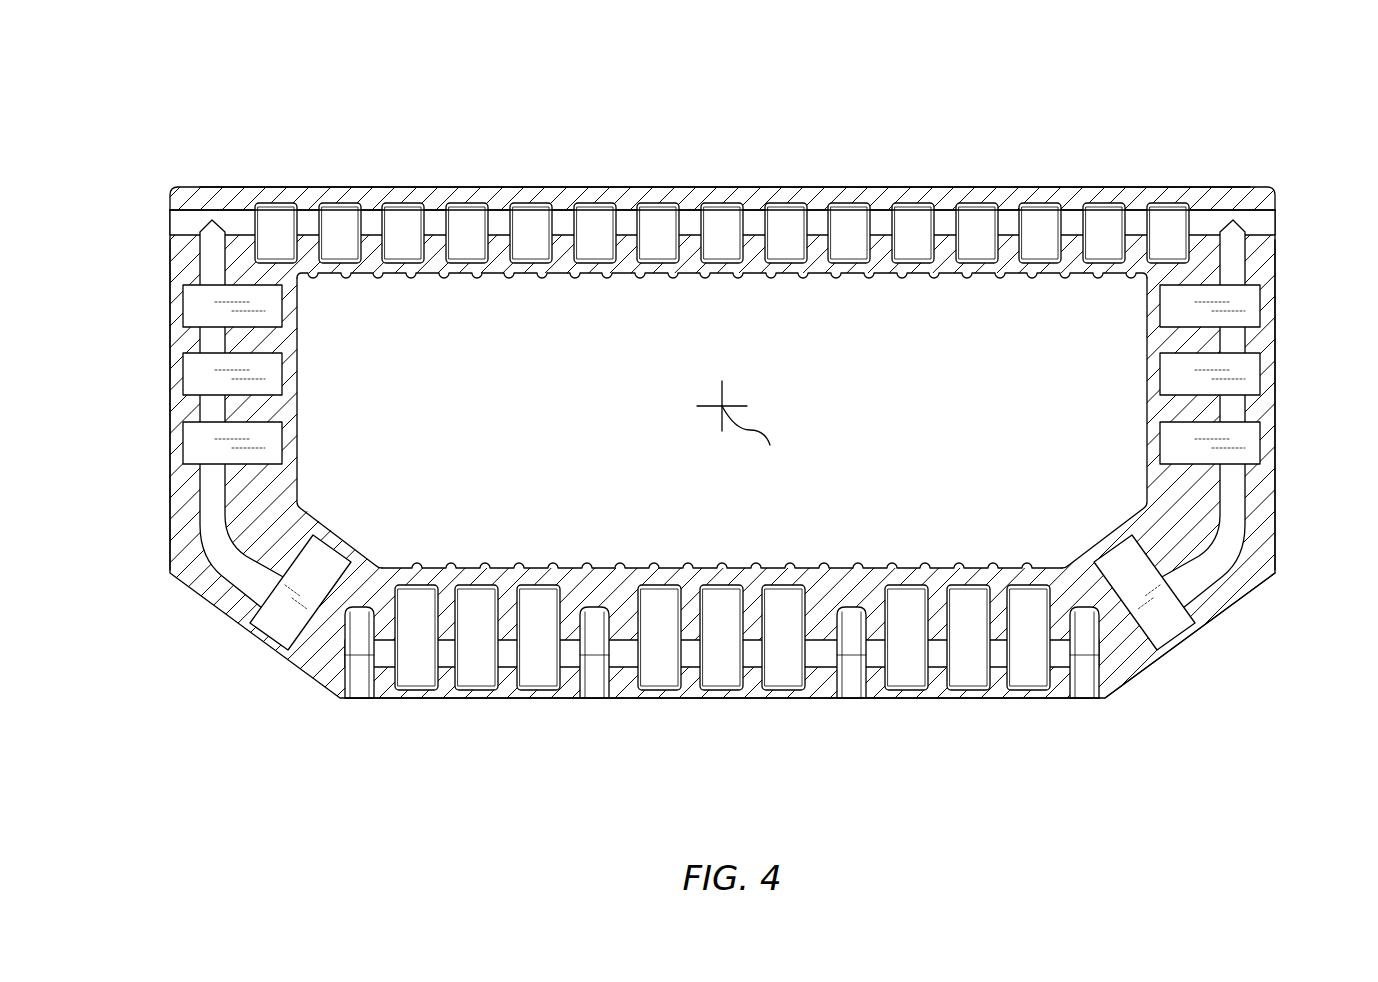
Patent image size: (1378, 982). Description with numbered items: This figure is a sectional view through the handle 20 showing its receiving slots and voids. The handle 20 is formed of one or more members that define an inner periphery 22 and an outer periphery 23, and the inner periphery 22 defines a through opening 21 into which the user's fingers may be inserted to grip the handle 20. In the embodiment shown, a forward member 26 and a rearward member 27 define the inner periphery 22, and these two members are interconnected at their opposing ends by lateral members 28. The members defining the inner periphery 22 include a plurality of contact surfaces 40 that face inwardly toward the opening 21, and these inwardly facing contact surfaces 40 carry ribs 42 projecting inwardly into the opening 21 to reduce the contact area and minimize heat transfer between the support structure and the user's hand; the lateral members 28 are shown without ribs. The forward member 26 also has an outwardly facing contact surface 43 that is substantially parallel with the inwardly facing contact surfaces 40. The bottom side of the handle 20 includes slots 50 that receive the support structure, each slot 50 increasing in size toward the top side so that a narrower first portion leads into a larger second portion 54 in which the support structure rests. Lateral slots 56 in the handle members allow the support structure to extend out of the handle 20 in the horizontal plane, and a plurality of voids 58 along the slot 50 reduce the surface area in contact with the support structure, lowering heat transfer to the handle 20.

The handle 20 is at (1074, 120).
The through opening 21 is at (887, 338).
The inner periphery 22 is at (667, 307).
The outer periphery 23 is at (347, 165).
The forward member 26 is at (753, 195).
The rearward member 27 is at (628, 698).
The lateral members 28 is at (178, 345).
The contact surfaces 40 is at (338, 412).
The ribs 42 is at (490, 283).
The outwardly facing contact surface 43 is at (561, 168).
The slot 50 is at (1247, 513).
The second portion 54 is at (1010, 222).
The lateral slots 56 is at (136, 227).
The voids 58 is at (412, 597).